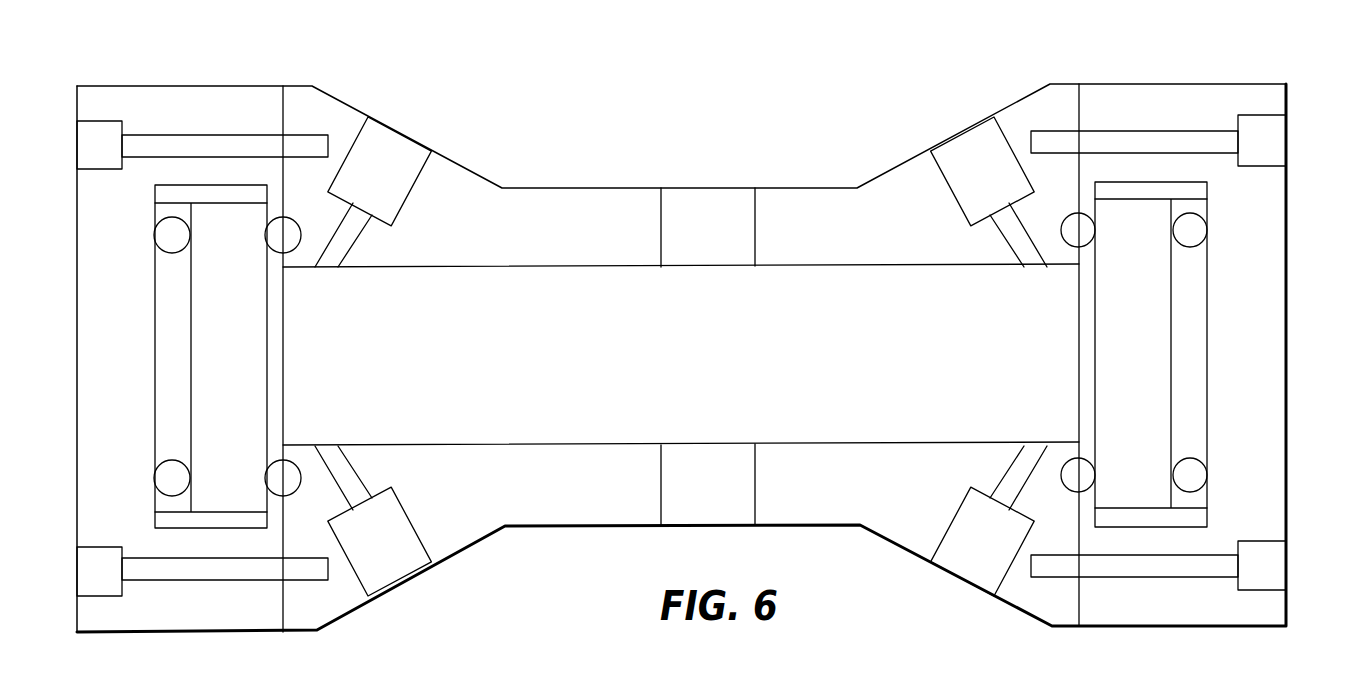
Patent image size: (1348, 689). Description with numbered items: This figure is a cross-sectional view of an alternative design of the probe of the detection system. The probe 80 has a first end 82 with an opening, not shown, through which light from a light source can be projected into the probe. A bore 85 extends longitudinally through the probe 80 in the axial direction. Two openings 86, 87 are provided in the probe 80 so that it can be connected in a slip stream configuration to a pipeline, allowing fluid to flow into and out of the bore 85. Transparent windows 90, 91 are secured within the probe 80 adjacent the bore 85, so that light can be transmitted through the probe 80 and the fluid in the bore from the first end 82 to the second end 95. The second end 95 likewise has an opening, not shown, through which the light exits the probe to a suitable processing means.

The probe 80 is at (700, 82).
The first end 82 is at (1263, 402).
The bore 85 is at (825, 278).
The opening 86 is at (694, 200).
The opening 87 is at (695, 495).
The transparent window 90 is at (1138, 295).
The transparent window 91 is at (207, 345).
The second end 95 is at (93, 398).